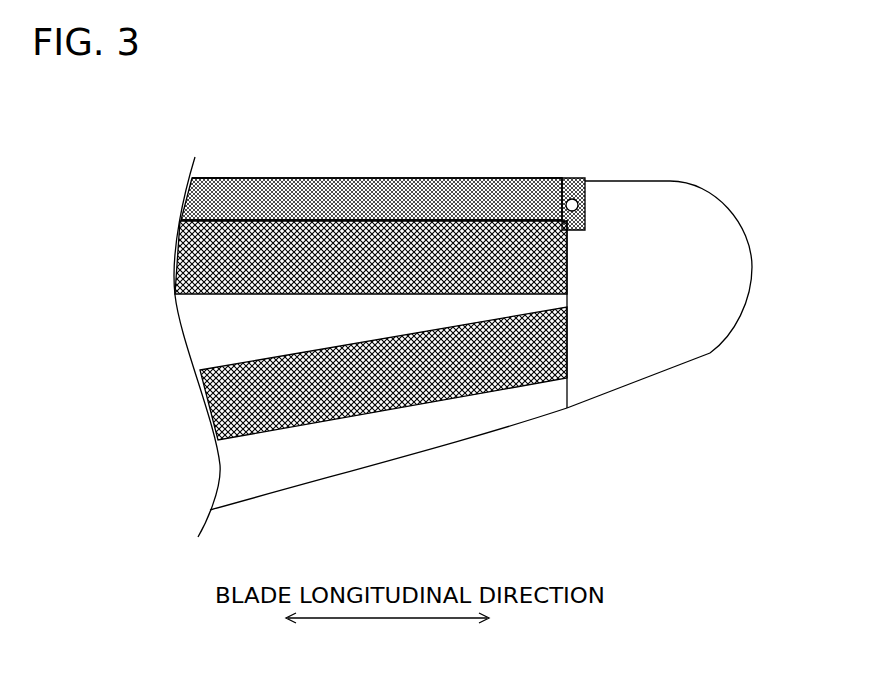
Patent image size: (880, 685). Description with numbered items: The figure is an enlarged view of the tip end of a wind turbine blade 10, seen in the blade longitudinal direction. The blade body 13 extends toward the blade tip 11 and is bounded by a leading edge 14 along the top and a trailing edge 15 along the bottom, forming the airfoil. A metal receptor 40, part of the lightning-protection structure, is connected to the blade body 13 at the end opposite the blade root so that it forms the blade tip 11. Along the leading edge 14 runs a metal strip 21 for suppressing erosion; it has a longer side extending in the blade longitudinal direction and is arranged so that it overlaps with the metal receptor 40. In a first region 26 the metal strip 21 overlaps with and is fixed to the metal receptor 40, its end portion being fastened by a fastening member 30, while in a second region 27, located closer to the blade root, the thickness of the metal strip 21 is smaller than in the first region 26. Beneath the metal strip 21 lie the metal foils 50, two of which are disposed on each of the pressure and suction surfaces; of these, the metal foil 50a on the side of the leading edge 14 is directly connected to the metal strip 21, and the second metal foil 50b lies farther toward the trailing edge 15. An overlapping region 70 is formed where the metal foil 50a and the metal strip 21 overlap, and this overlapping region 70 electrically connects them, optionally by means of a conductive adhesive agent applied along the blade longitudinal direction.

The wind turbine blade 10 is at (667, 133).
The blade tip 11 is at (753, 268).
The blade body 13 is at (422, 427).
The leading edge 14 is at (335, 178).
The trailing edge 15 is at (323, 483).
The metal strip 21 is at (420, 178).
The first region 26 is at (567, 172).
The second region 27 is at (262, 168).
The fastening member 30 is at (590, 183).
The metal receptor 40 is at (660, 355).
The metal foils 50 is at (305, 330).
The metal foil on the leading edge side 50a is at (172, 278).
The second damping layer 50b is at (200, 393).
The overlapping region 70 is at (170, 228).